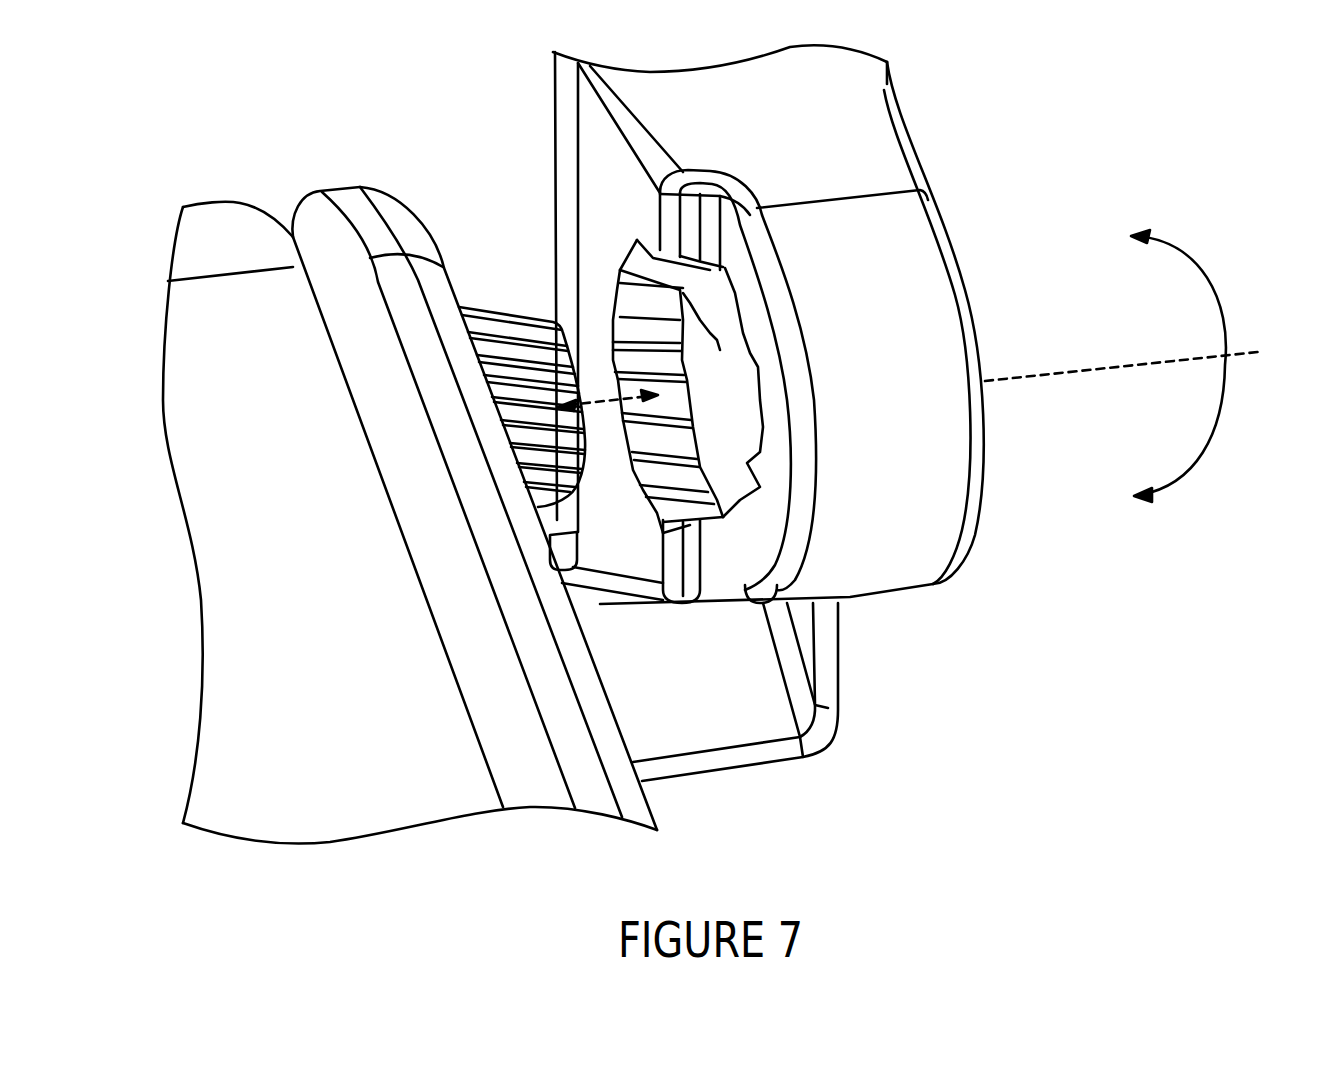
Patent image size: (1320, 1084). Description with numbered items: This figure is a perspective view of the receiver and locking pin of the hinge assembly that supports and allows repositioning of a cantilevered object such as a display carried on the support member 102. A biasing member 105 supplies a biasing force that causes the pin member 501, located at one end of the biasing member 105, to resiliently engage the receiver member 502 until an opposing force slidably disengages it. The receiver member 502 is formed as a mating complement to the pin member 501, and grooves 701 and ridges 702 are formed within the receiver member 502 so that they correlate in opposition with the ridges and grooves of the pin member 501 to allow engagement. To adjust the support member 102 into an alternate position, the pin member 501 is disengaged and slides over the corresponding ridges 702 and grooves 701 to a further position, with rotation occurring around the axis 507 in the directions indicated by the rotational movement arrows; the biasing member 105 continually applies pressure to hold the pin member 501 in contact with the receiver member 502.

The support member 102 is at (218, 213).
The biasing member 105 is at (646, 812).
The pin member 501 is at (497, 311).
The receiver member 502 is at (960, 440).
The axis 507 is at (1078, 370).
The grooves 701 is at (703, 500).
The ridges 702 is at (697, 340).